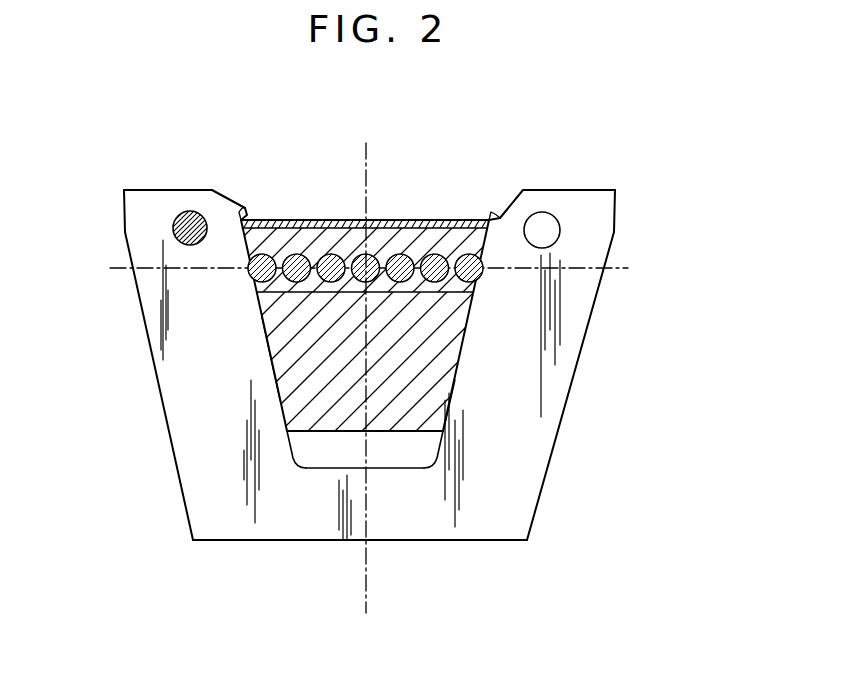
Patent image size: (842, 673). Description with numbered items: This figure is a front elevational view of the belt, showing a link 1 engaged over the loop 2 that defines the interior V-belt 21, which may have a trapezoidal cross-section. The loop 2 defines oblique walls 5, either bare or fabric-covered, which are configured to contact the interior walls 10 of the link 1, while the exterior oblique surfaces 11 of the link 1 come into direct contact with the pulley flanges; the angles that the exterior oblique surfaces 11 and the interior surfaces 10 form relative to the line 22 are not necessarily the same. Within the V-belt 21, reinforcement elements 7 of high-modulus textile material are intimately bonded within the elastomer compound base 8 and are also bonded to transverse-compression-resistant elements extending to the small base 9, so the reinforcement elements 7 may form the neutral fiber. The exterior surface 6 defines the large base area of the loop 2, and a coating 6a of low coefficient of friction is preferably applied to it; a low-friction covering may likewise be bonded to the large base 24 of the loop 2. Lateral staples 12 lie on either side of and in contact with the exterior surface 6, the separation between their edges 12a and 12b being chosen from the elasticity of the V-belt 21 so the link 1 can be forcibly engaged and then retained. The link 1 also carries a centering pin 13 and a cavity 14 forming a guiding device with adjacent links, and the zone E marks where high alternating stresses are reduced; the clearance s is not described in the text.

The link 1 is at (641, 188).
The loop 2 is at (492, 187).
The oblique walls 5 is at (262, 358).
The exterior surface 6 is at (407, 210).
The coating 6a is at (445, 210).
The reinforcement elements 7 is at (258, 349).
The elastomer compound base 8 is at (283, 240).
The small base 9 is at (403, 452).
The interior walls 10 is at (298, 403).
The exterior oblique surfaces 11 is at (157, 439).
The lateral staples 12 is at (213, 190).
The edge of staple 12a is at (250, 215).
The edge of staple 12b is at (488, 210).
The centering pin 13 is at (178, 213).
The cavity 14 is at (505, 220).
The V-belt 21 is at (444, 412).
The line 22 is at (366, 592).
The large base 24 is at (374, 236).
The zone E is at (318, 444).
The gap s is at (233, 225).